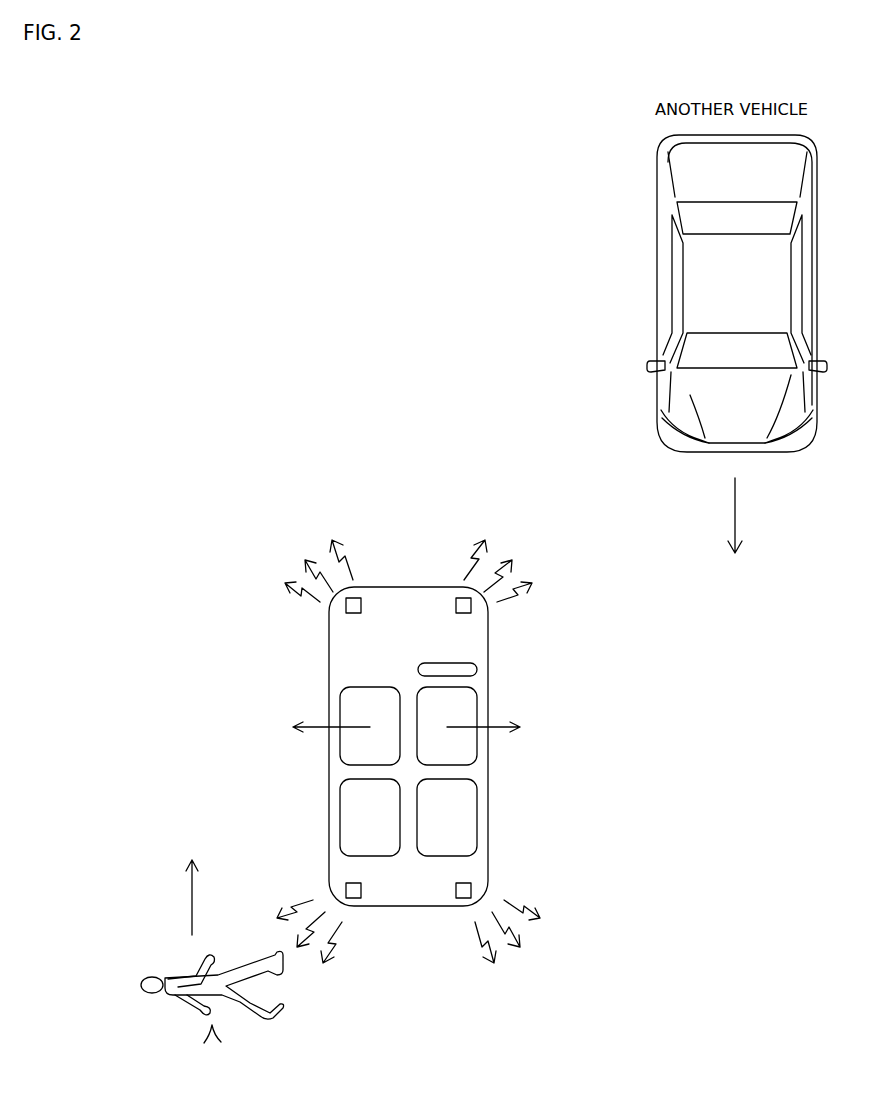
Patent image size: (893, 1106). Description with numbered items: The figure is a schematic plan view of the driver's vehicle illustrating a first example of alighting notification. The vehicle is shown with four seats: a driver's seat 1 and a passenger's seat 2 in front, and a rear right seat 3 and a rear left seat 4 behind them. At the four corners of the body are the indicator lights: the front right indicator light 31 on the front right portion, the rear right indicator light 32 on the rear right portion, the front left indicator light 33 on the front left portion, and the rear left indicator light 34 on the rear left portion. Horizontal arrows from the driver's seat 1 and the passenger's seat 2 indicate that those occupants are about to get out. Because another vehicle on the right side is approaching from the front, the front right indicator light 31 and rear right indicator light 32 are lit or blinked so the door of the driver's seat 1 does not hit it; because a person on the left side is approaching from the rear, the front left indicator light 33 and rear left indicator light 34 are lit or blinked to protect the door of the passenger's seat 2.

The driver's seat 1 is at (467, 748).
The passenger's seat 2 is at (350, 748).
The rear right seat 3 is at (467, 836).
The rear left seat 4 is at (350, 836).
The front right indicator light 31 is at (465, 614).
The rear right indicator light 32 is at (471, 887).
The front left indicator light 33 is at (352, 614).
The rear left indicator light 34 is at (346, 887).